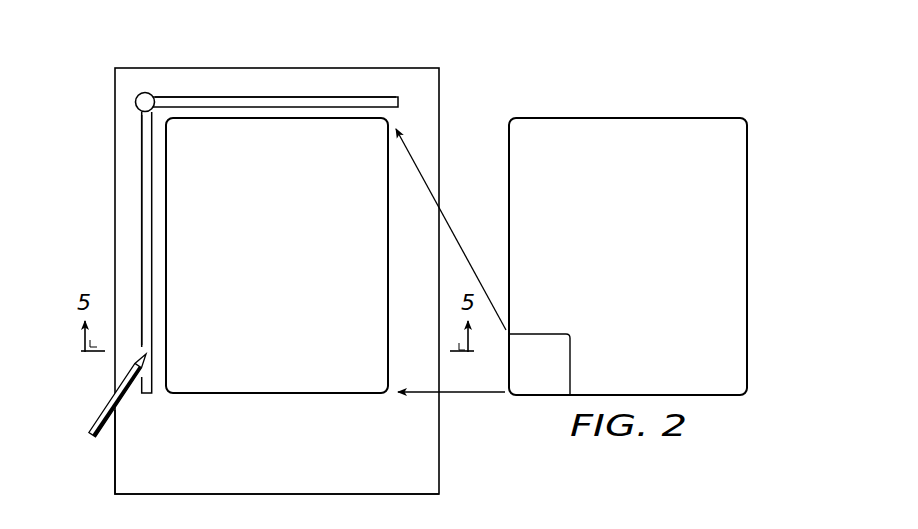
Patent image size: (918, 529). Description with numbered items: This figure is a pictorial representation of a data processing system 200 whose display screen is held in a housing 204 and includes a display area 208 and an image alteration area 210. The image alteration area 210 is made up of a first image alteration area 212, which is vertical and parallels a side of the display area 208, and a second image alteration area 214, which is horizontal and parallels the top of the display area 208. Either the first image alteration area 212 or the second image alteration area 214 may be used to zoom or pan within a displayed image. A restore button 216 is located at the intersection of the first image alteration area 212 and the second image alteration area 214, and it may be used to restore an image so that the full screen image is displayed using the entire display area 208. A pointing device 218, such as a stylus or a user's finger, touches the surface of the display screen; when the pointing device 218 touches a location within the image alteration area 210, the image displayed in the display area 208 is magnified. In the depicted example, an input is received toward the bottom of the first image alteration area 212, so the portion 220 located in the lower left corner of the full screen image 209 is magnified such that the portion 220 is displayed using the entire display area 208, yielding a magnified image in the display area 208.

The data processing system 200 is at (93, 118).
The housing 204 is at (255, 456).
The display area 208 is at (255, 265).
The full screen image 209 is at (613, 265).
The image alteration area 210 is at (344, 96).
The first image alteration area 212 is at (143, 235).
The second image alteration area 214 is at (275, 102).
The restore button 216 is at (146, 92).
The pointing device 218 is at (100, 408).
The portion 220 is at (524, 376).